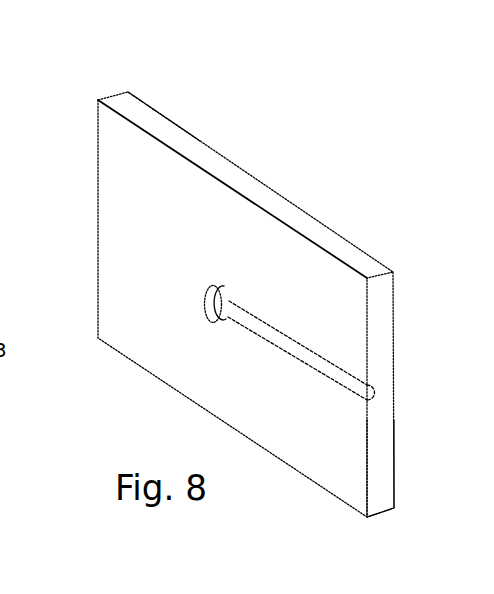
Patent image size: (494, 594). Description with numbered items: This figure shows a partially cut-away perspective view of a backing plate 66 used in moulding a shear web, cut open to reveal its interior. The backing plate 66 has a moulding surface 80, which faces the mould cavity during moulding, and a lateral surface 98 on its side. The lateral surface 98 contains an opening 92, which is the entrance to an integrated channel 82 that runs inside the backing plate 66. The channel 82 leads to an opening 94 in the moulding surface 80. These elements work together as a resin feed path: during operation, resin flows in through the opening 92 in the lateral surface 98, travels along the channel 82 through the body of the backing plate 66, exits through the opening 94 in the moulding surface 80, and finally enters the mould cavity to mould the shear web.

The backing plate 66 is at (283, 143).
The moulding surface 80 is at (155, 110).
The integrated channel 82 is at (297, 347).
The opening 92 is at (370, 396).
The opening 94 is at (220, 305).
The lateral surface 98 is at (379, 445).